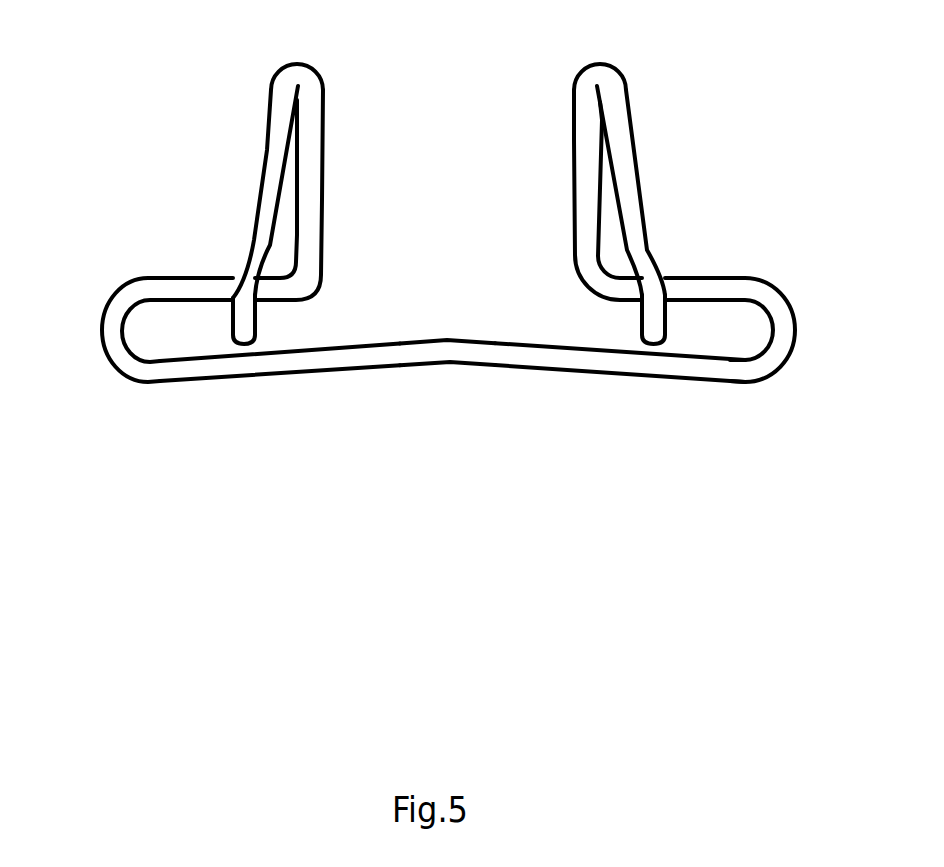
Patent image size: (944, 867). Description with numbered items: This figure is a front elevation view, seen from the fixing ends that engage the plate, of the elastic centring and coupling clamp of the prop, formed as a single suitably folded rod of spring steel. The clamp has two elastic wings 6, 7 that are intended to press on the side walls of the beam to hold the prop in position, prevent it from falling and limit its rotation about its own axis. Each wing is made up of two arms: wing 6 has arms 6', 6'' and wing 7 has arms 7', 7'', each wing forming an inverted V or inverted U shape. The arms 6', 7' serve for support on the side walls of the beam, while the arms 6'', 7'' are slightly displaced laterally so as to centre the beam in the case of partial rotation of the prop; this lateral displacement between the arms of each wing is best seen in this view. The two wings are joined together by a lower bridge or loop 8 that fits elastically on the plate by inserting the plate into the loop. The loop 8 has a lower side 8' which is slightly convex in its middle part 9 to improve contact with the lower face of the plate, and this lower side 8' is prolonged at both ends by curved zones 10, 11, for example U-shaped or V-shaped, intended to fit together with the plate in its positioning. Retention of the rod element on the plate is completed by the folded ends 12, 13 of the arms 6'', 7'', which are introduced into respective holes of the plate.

The wing 6 is at (623, 259).
The arm 6' is at (559, 195).
The arm 6'' is at (673, 190).
The wing 7 is at (279, 261).
The arm 7' is at (343, 195).
The arm 7'' is at (225, 192).
The loop 8 is at (447, 412).
The lower side 8' is at (452, 413).
The middle part 9 is at (443, 352).
The curved zone 10 is at (88, 366).
The curved zone 11 is at (810, 369).
The folded end 12 is at (655, 322).
The folded end 13 is at (240, 332).